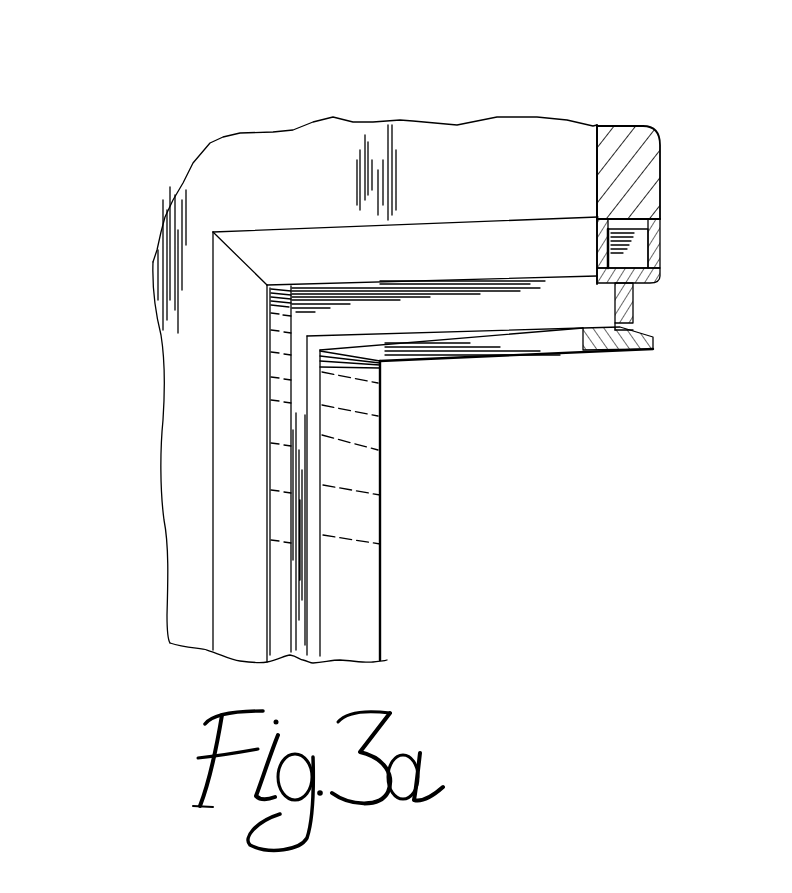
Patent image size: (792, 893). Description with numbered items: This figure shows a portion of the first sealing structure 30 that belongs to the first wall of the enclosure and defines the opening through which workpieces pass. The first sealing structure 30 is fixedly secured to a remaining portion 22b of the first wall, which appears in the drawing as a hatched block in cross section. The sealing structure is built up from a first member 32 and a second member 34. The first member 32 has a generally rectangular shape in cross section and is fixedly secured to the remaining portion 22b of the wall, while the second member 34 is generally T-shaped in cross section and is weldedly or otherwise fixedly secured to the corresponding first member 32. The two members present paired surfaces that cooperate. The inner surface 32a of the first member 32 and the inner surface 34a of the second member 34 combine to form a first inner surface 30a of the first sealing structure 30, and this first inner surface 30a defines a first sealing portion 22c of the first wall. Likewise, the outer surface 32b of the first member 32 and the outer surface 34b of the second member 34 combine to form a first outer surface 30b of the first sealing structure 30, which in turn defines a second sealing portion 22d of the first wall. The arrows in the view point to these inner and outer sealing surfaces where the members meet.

The first member 32 is at (485, 243).
The inner surface of first member 32a is at (650, 286).
The outer surface of first member 32b is at (290, 535).
The remaining portion of the first wall 22b is at (580, 180).
The first sealing portion 22c is at (658, 330).
The second sealing portion 22d is at (505, 299).
The first sealing structure 30 is at (582, 307).
The first inner surface 30a is at (641, 307).
The first outer surface 30b is at (474, 299).
The second member 34 is at (640, 352).
The inner surface of second member 34a is at (618, 323).
The outer surface of second member 34b is at (525, 303).